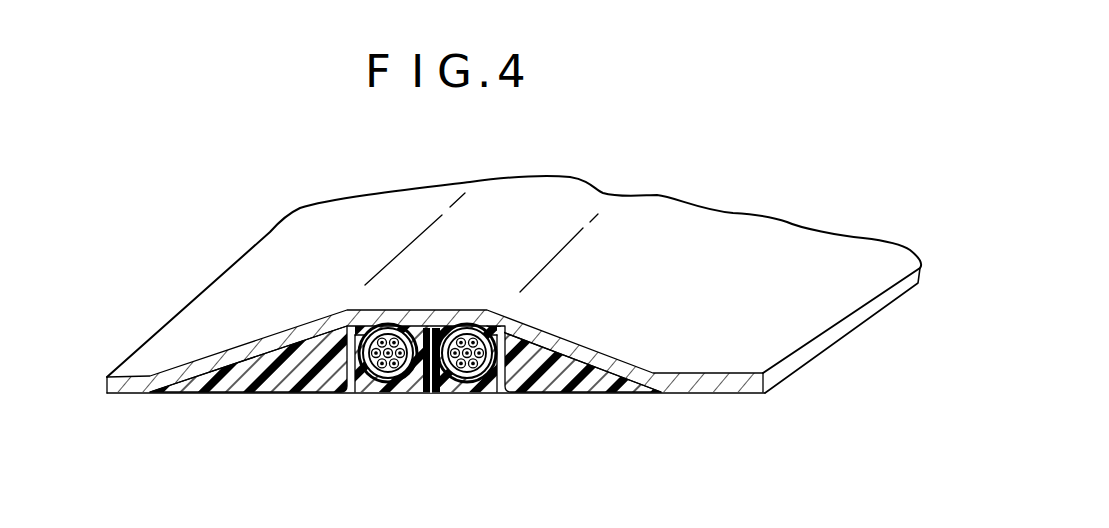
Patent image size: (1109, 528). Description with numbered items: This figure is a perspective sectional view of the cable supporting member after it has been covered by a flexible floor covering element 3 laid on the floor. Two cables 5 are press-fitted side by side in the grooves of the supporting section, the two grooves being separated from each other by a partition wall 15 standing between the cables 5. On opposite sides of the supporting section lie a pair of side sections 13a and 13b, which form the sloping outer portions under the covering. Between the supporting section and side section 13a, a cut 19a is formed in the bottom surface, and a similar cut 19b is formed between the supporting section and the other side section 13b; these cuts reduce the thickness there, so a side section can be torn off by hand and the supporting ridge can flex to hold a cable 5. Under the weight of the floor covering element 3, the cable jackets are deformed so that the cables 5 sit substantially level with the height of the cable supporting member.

The flexible floor covering element 3 is at (658, 226).
The cable 5 is at (389, 380).
The side section 13a is at (250, 393).
The side section 13b is at (565, 393).
The partition wall 15 is at (422, 382).
The cut 19a is at (351, 398).
The cut 19b is at (503, 400).